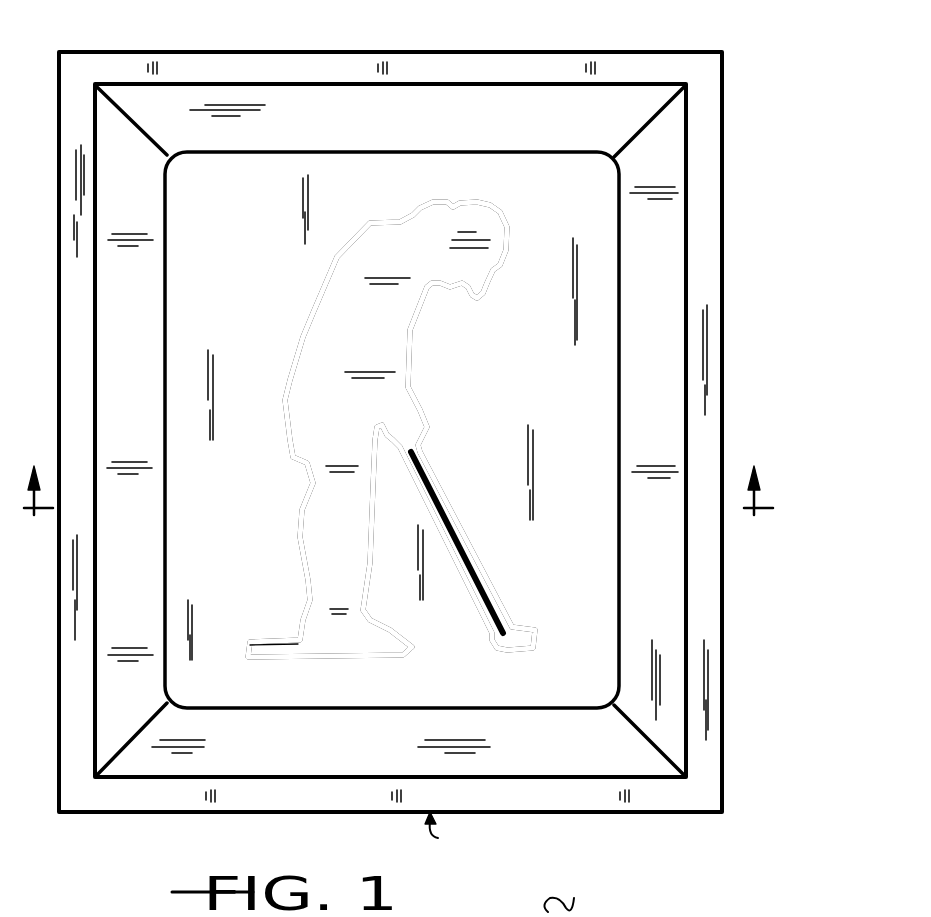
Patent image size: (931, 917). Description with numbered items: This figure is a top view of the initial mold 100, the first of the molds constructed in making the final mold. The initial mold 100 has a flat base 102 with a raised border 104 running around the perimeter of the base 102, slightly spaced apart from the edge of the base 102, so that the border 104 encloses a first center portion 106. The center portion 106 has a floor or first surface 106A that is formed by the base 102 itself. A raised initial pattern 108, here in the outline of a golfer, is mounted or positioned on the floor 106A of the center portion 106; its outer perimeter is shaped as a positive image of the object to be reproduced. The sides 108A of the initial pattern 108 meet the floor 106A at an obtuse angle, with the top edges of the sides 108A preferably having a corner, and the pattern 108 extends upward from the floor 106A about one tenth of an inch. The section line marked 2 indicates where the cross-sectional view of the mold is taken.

The initial mold 100 is at (436, 44).
The flat base 102 is at (708, 722).
The raised border 104 is at (657, 305).
The first center portion 106 is at (481, 430).
The floor or first surface 106A is at (280, 278).
The raised initial pattern 108 is at (373, 476).
The sides of the initial pattern 108A is at (270, 648).
The section line 2- 2 is at (398, 477).